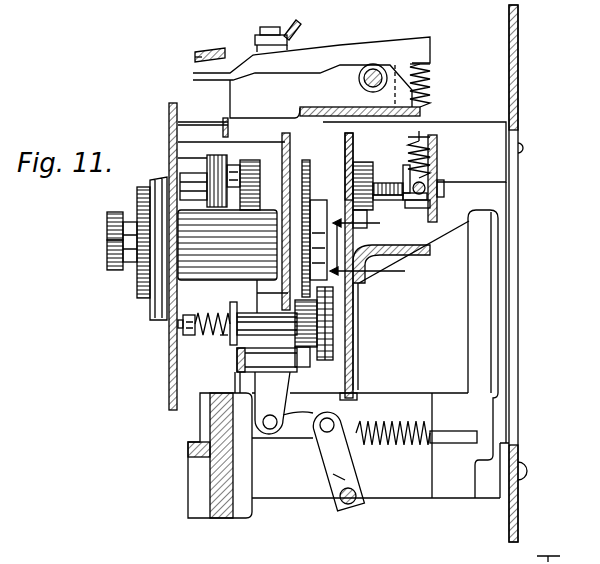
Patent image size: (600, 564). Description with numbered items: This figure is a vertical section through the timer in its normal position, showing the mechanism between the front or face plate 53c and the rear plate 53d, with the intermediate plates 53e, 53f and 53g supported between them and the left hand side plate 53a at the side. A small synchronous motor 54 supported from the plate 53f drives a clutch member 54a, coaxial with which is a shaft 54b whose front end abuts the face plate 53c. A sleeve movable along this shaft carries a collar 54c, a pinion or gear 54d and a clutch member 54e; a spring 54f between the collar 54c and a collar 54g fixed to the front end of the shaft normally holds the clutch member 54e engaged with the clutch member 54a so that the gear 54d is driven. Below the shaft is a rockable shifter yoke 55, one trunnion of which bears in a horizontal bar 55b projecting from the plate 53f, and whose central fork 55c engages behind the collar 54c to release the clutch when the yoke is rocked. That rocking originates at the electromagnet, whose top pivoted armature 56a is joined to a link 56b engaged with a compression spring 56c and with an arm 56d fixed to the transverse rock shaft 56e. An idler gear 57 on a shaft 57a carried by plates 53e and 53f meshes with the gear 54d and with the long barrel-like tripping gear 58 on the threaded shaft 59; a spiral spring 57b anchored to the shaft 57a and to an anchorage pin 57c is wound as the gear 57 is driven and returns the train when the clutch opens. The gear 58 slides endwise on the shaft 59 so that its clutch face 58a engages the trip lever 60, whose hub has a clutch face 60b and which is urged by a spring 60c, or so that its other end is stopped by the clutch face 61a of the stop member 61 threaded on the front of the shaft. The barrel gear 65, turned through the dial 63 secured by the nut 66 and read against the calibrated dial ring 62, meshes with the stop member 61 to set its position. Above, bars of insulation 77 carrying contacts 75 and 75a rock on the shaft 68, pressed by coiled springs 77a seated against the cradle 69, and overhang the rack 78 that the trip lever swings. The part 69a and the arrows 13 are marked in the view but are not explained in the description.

The direction arrows 13 is at (378, 249).
The left hand side plate 53a is at (478, 108).
The front or face plate 53c is at (169, 112).
The rear plate 53d is at (520, 85).
The intermediate plate 53e is at (283, 147).
The intermediate plate 53f is at (353, 145).
The intermediate plate 53g is at (437, 152).
The synchronous motor 54 is at (500, 277).
The clutch member 54a is at (353, 300).
The shaft 54b is at (178, 323).
The collar 54c is at (232, 307).
The pinion or gear 54d is at (305, 360).
The clutch member 54e is at (333, 347).
The spring 54f is at (210, 335).
The collar 54g is at (215, 340).
The shifter yoke 55 is at (237, 352).
The horizontal bar 55b is at (278, 373).
The fork 55c is at (232, 348).
The armature 56a is at (277, 434).
The link 56b is at (313, 445).
The compression spring 56c is at (398, 445).
The arm 56d is at (335, 477).
The rock shaft 56e is at (349, 505).
The idler gear 57 is at (291, 157).
The shaft 57a is at (410, 243).
The spiral spring 57b is at (357, 165).
The anchorage pin 57c is at (431, 252).
The tripping gear 58 is at (303, 158).
The clutch face 58a is at (368, 177).
The threaded shaft 59 is at (208, 200).
The trip lever 60 is at (437, 174).
The clutch face 60b is at (437, 205).
The spring 60c is at (437, 160).
The stop member 61 is at (185, 195).
The clutch face 61a is at (207, 168).
The calibrated dial ring 62 is at (167, 288).
The dial 63 is at (107, 258).
The barrel gear 65 is at (167, 232).
The nut 66 is at (107, 222).
The shaft 68 is at (374, 64).
The cradle 69 is at (303, 200).
The pin 69a is at (396, 64).
The contact 75 is at (218, 48).
The contact 75a is at (195, 58).
The bar of insulation 77 is at (431, 44).
The coiled spring 77a is at (428, 68).
The rack 78 is at (222, 128).